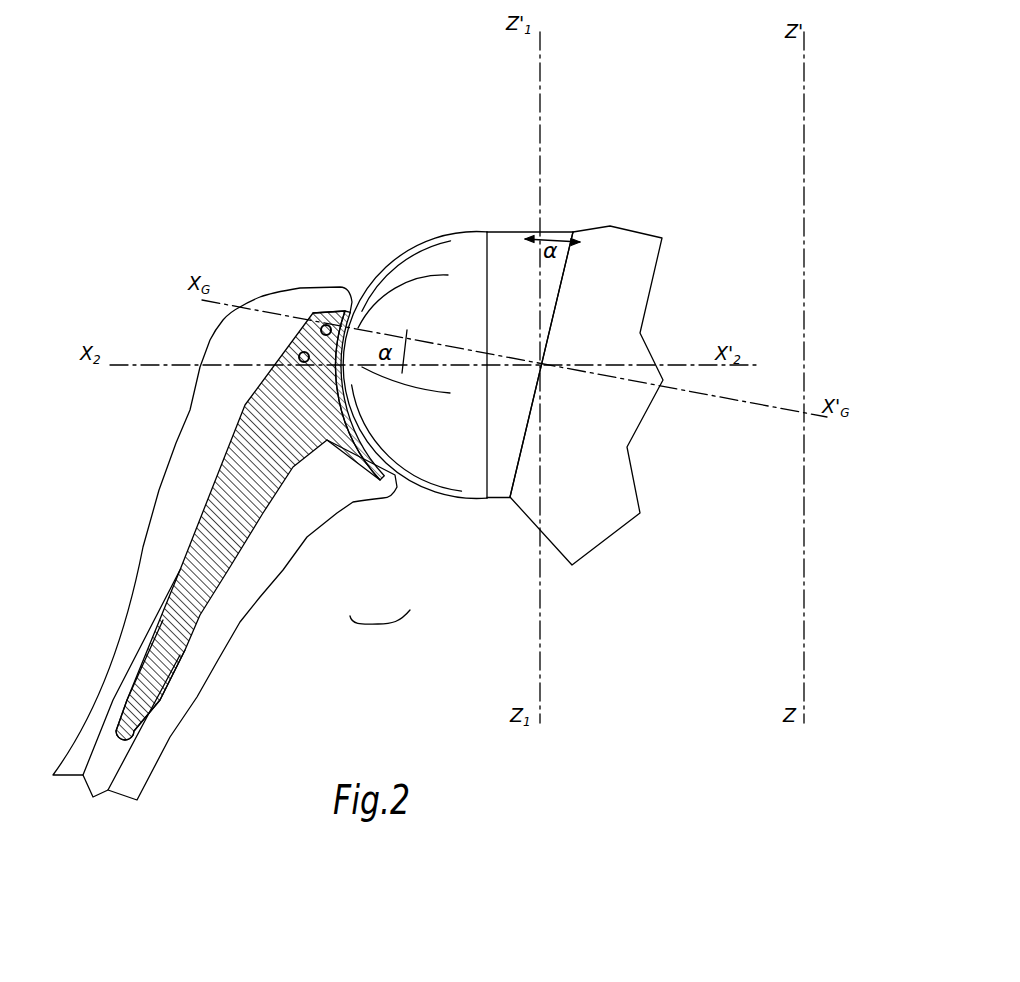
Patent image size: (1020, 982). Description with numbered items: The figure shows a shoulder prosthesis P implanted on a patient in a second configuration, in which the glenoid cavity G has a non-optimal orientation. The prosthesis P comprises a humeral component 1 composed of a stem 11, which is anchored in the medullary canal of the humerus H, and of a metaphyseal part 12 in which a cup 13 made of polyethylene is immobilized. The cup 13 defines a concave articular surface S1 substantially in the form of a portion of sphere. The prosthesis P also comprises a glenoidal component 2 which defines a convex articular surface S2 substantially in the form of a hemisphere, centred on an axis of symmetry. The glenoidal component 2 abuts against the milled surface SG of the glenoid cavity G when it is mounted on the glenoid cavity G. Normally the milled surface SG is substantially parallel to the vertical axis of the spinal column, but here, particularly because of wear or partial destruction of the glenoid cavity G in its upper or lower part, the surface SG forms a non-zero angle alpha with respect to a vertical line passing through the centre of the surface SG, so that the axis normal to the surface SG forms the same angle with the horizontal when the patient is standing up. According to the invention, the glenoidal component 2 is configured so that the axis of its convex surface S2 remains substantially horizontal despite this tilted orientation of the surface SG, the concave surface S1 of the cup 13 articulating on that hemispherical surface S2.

The humeral component 1 is at (262, 542).
The glenoidal component 2 is at (458, 391).
The stem 11 is at (158, 646).
The metaphyseal part 12 is at (305, 323).
The cup 13 is at (358, 327).
The humerus H is at (165, 735).
The glenoid cavity G is at (585, 366).
The prosthesis P is at (380, 628).
The concave articular surface S1 is at (450, 500).
The convex articular surface S2 is at (432, 240).
The milled surface of the glenoid cavity SG is at (543, 332).